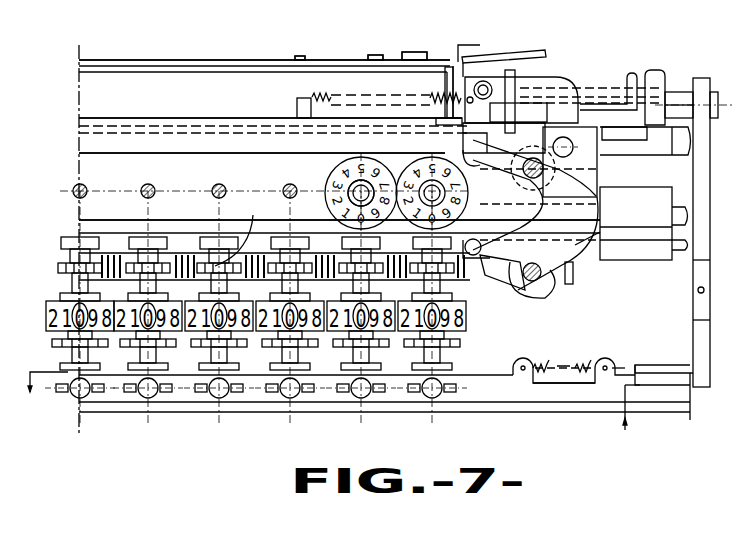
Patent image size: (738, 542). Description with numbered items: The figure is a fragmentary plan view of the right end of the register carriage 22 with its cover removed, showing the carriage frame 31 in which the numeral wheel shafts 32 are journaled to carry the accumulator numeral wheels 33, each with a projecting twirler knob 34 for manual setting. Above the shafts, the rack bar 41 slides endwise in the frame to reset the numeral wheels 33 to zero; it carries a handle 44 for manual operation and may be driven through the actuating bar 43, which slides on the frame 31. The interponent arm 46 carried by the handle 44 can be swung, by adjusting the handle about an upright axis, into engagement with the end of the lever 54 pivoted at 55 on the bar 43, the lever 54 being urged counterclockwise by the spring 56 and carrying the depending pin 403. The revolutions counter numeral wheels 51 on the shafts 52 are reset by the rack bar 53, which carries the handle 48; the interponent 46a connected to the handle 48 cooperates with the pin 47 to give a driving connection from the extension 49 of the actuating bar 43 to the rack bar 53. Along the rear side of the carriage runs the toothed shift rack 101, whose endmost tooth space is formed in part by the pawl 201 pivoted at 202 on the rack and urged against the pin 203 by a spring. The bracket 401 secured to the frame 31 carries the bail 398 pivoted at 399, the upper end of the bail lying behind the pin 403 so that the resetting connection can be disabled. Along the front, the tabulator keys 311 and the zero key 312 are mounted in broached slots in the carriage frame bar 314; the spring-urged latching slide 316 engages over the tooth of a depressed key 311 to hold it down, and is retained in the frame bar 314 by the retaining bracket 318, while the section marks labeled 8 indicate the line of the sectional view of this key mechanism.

The toothed shift rack 101 is at (186, 48).
The pawl 201 is at (300, 57).
The pin 203 is at (368, 56).
The pivot 202 is at (415, 54).
The pin 403 is at (462, 56).
The lever 54 is at (530, 72).
The pivot 399 is at (575, 85).
The bail 398 is at (630, 72).
The bracket 401 is at (650, 72).
The actuating bar 43 is at (210, 135).
The spring 56 is at (312, 97).
The carriage frame 31 is at (79, 169).
The numeral wheel shafts 32 is at (213, 188).
The register carriage 22 is at (77, 220).
The twirler knobs 34 is at (350, 190).
The numeral wheels 33 is at (377, 168).
The rack bar 41 is at (447, 172).
The pivot 55 is at (570, 152).
The handle 44 is at (597, 197).
The interponent arm 46 is at (503, 168).
The shafts 52 is at (238, 232).
The numeral wheels 51 is at (79, 318).
The pin 47 is at (476, 262).
The interponent 46a is at (520, 292).
The handle 48 is at (540, 282).
The rack bar 53 is at (573, 285).
The extension 49 is at (612, 252).
The retaining bracket 318 is at (603, 366).
The section line 8 is at (334, 409).
The tabulator keys 311 is at (214, 397).
The zero tabulator key 312 is at (427, 397).
The latching slide 316 is at (483, 398).
The carriage frame bar 314 is at (566, 398).